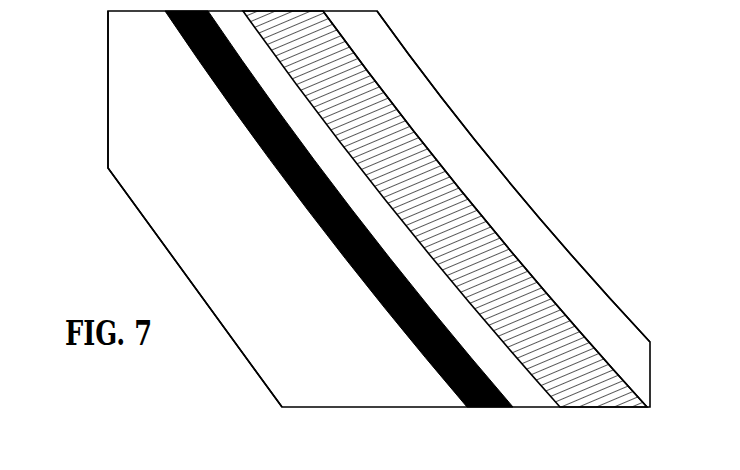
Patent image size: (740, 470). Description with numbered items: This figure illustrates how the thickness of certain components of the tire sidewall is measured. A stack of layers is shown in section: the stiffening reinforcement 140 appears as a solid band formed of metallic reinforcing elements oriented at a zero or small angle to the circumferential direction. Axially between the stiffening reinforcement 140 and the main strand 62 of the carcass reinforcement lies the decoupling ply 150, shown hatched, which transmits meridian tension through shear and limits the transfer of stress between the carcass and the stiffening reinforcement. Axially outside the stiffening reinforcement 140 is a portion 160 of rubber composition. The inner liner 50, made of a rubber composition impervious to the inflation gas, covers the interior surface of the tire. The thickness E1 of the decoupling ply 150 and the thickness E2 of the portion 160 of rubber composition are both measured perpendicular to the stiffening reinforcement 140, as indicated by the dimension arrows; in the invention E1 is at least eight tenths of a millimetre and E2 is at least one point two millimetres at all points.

The inner liner 50 is at (505, 200).
The main strand 62 is at (392, 177).
The stiffening reinforcement 140 is at (190, 60).
The decoupling ply 150 is at (455, 308).
The portion of rubber composition 160 is at (276, 291).
The thickness of the decoupling ply E1 is at (334, 139).
The thickness of the portion of rubber composition E2 is at (236, 121).